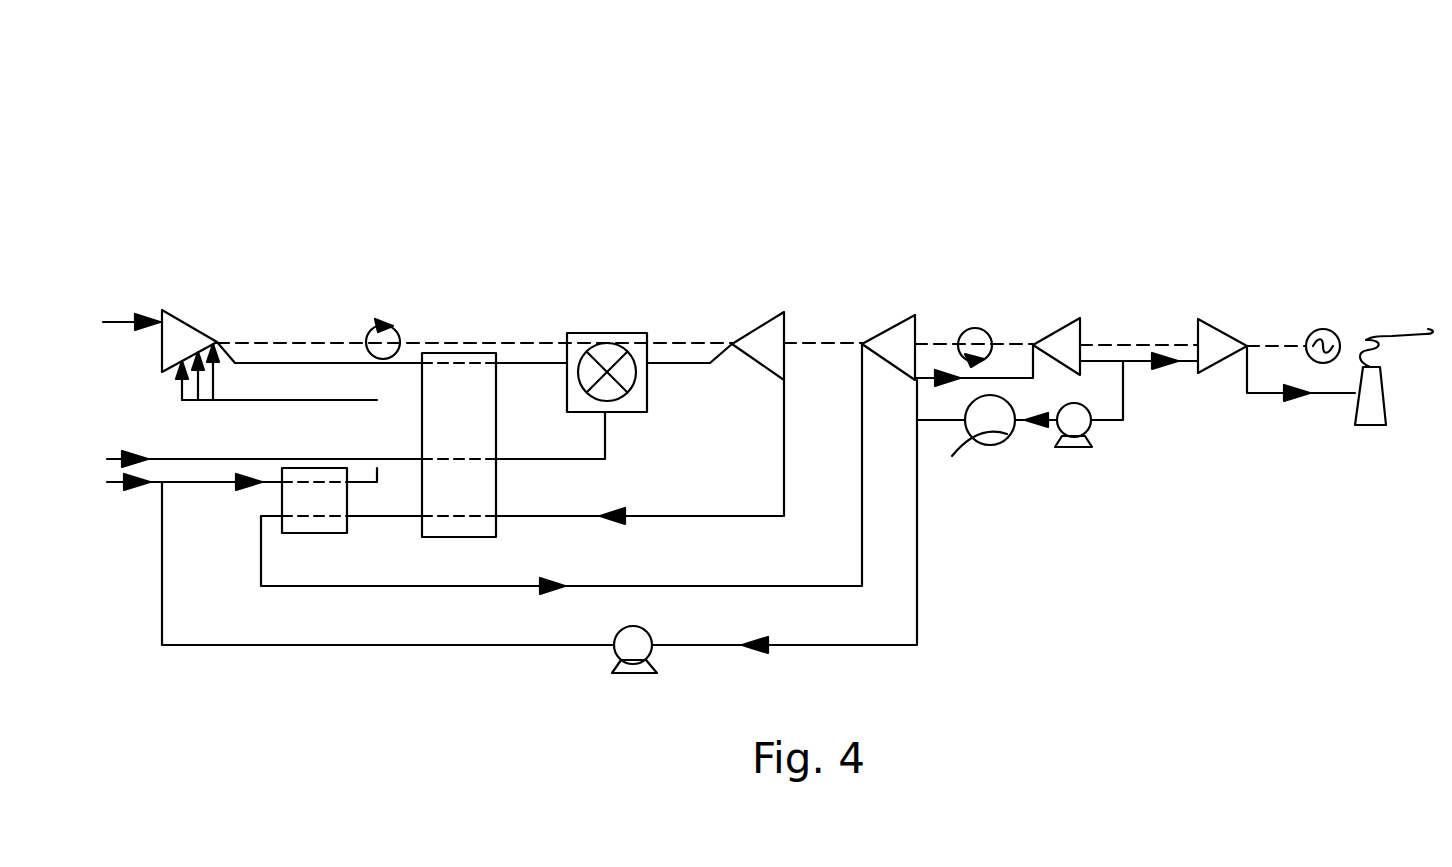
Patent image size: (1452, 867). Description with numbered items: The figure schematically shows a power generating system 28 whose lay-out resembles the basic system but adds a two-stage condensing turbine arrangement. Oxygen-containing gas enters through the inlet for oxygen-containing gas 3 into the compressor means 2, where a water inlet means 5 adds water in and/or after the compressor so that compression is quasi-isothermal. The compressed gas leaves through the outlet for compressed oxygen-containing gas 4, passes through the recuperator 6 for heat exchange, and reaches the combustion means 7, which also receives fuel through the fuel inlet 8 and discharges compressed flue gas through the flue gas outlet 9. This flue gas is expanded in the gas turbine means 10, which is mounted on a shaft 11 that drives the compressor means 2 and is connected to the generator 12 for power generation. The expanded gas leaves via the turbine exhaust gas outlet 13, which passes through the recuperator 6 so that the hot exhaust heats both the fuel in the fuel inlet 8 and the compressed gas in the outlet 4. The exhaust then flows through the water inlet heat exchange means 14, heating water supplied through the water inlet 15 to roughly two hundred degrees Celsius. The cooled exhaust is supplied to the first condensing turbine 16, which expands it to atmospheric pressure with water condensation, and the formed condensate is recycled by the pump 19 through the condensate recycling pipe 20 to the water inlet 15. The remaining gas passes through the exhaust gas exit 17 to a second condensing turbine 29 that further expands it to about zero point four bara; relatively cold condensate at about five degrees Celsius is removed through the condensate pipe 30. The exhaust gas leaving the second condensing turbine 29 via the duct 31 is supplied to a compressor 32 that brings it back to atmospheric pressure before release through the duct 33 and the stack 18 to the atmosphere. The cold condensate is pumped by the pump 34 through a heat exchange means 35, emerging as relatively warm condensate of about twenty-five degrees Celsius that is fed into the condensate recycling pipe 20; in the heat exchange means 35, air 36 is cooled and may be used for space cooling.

The compressor means 2 is at (200, 330).
The inlet for oxygen-containing gas 3 is at (120, 322).
The outlet for compressed oxygen-containing gas 4 is at (252, 367).
The water inlet means 5 is at (212, 410).
The recuperator 6 is at (497, 392).
The combustion means 7 is at (630, 412).
The fuel inlet 8 is at (192, 458).
The flue gas outlet 9 is at (663, 365).
The gas turbine means 10 is at (743, 352).
The shaft 11 is at (668, 344).
The generator 12 is at (1328, 300).
The turbine exhaust gas outlet 13 is at (372, 516).
The water inlet heat exchange means 14 is at (287, 534).
The water inlet 15 is at (153, 484).
The first condensing turbine 16 is at (898, 322).
The exhaust gas exit 17 is at (1010, 385).
The stack 18 is at (1386, 380).
The pump 19 is at (648, 630).
The condensate recycling pipe 20 is at (360, 648).
The power generating system 28 is at (624, 304).
The second condensing turbine 29 is at (1082, 332).
The condensate pipe 30 is at (1123, 405).
The duct 31 is at (1135, 363).
The compressor 32 is at (1203, 322).
The duct 33 is at (1247, 378).
The pump 34 is at (1092, 438).
The heat exchange means 35 is at (965, 430).
The air 36 is at (1019, 442).